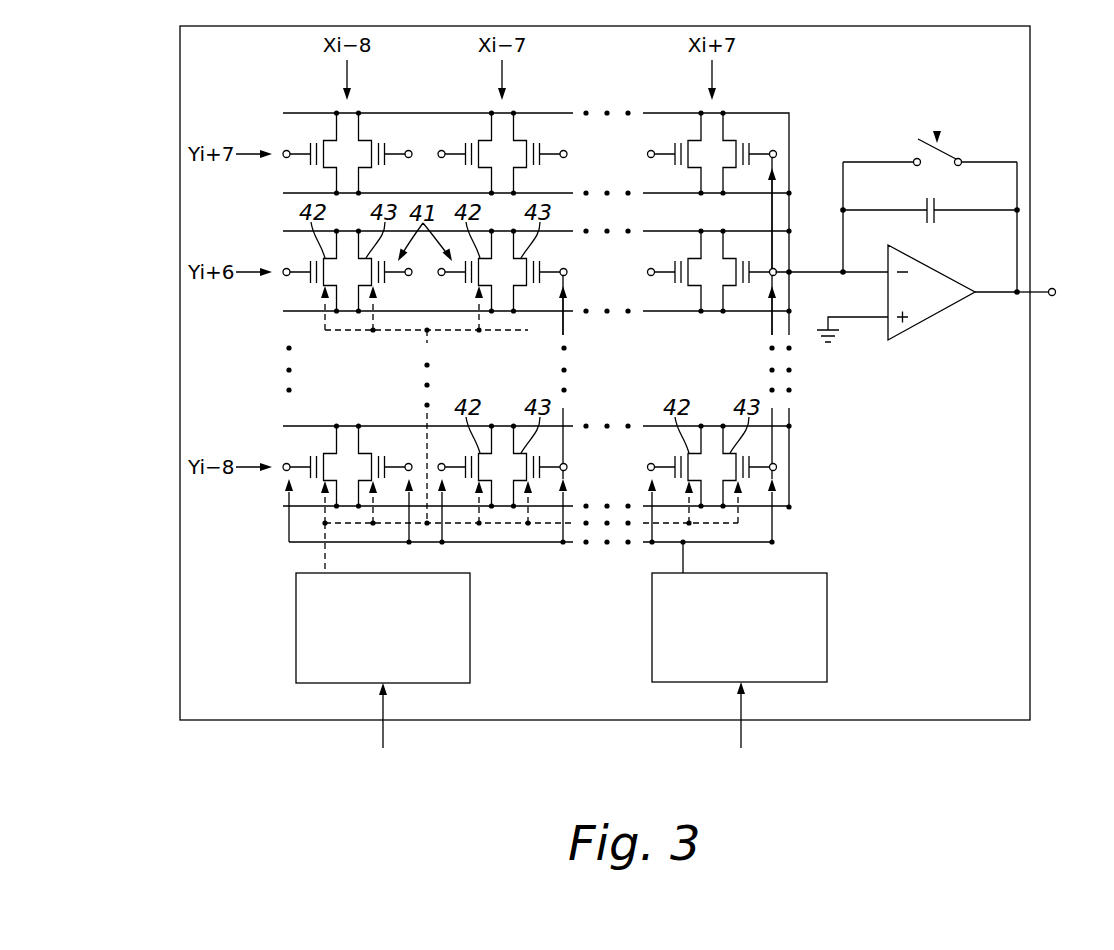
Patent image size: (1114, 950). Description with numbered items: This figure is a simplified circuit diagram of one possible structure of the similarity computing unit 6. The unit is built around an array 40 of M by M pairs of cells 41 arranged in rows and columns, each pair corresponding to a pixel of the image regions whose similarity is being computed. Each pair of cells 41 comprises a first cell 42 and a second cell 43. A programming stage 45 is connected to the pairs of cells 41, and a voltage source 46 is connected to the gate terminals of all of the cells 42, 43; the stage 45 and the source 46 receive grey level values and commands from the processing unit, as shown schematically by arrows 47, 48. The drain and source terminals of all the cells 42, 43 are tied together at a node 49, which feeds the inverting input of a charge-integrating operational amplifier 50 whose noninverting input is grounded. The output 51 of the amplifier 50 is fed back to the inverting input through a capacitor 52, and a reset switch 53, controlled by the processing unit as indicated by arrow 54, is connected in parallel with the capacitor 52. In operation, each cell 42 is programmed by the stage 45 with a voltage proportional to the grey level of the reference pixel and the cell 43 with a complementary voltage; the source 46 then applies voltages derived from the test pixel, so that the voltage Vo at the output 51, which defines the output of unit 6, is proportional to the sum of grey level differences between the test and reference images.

The similarity computing unit 6 is at (1031, 57).
The array 40 is at (809, 118).
The pair of cells 41 is at (449, 137).
The first cell 42 is at (325, 140).
The second cell 43 is at (366, 140).
The programming stage 45 is at (296, 628).
The voltage source 46 is at (652, 628).
The arrow 47 is at (383, 730).
The arrow 48 is at (741, 730).
The node 49 is at (790, 274).
The charge-integrating operational amplifier 50 is at (932, 318).
The output 51 is at (1052, 288).
The capacitor 52 is at (938, 206).
The reset switch 53 is at (948, 153).
The arrow 54 is at (938, 134).